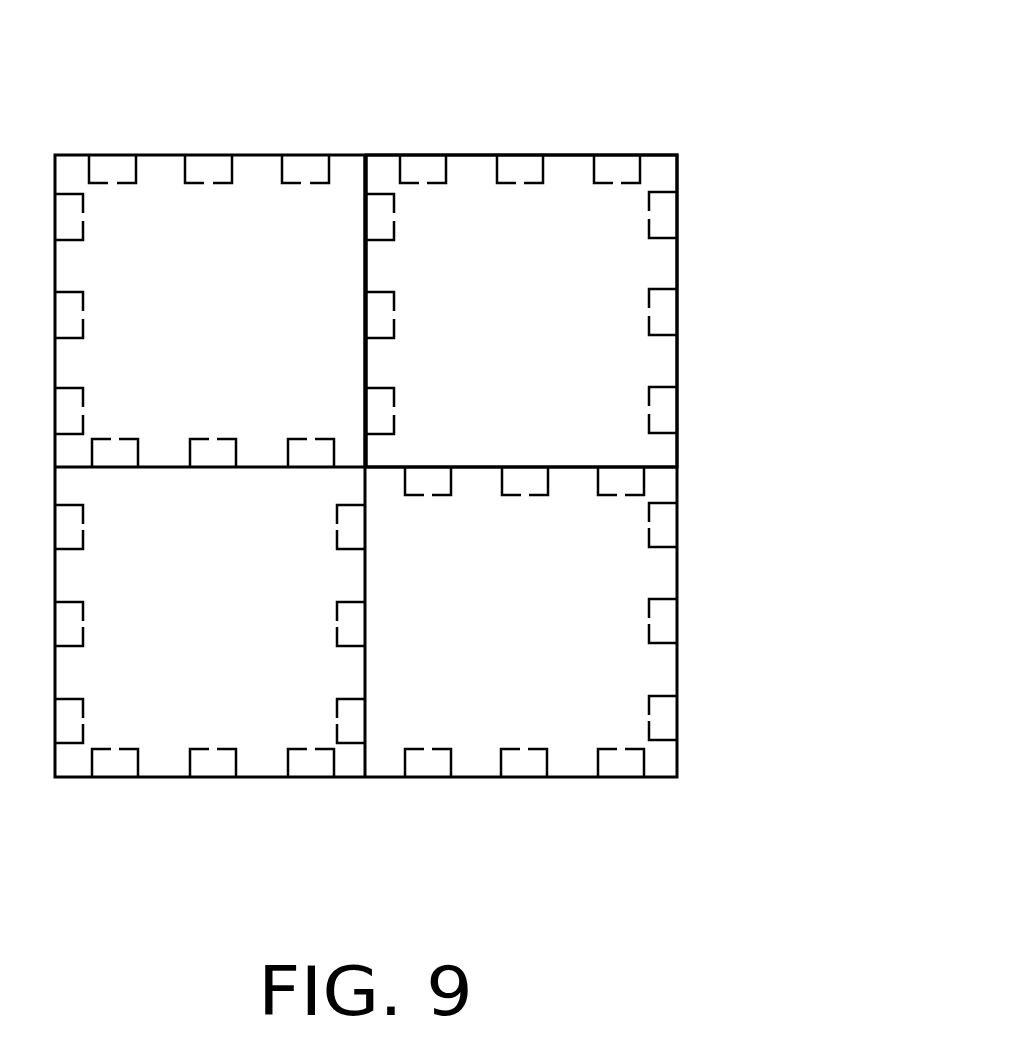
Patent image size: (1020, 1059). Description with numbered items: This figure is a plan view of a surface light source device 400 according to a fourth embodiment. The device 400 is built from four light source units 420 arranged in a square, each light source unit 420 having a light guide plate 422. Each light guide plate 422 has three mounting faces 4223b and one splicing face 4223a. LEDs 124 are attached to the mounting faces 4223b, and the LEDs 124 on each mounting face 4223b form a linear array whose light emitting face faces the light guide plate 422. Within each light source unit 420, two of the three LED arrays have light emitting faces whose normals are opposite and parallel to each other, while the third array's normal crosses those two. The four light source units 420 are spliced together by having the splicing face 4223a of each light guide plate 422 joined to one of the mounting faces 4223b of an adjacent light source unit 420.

The surface light source device 400 is at (373, 47).
The light source unit 420 is at (813, 132).
The light guide plate 422 is at (662, 175).
The LED 124 is at (660, 213).
The splicing face 4223a is at (363, 307).
The mounting face 4223b is at (367, 273).